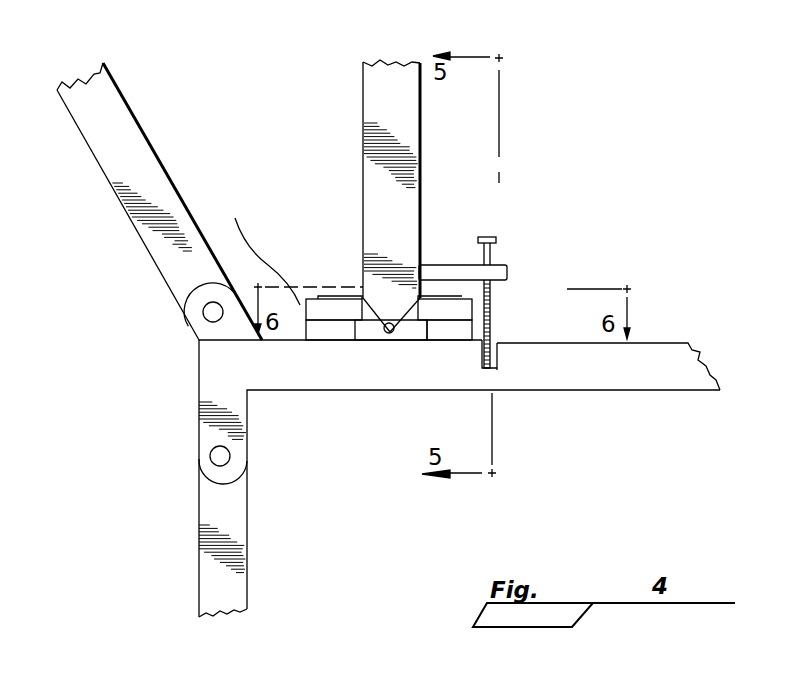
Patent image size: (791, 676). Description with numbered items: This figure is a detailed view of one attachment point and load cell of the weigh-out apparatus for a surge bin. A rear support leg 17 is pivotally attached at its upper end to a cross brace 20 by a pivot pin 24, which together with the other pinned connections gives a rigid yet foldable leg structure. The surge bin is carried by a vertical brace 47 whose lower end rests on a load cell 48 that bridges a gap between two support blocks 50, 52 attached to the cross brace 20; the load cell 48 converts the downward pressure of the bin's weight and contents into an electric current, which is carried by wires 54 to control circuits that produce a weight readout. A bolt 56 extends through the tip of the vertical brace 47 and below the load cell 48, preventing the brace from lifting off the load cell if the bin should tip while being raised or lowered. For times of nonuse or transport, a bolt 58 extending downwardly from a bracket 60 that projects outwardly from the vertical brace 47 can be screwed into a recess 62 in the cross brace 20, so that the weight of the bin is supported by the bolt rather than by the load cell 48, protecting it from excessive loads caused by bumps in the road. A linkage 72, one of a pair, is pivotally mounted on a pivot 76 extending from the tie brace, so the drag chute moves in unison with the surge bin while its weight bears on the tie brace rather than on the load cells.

The rear support leg 17 is at (210, 510).
The cross brace 20 is at (612, 377).
The pivot pin 24 is at (230, 456).
The vertical brace 47 is at (412, 113).
The load cell 48 is at (332, 308).
The support block 50 is at (325, 333).
The support block 52 is at (448, 335).
The wires 54 is at (252, 240).
The bolt 56 is at (392, 335).
The bolt 58 is at (490, 318).
The bracket 60 is at (465, 268).
The recess 62 is at (492, 370).
The linkage 72 is at (107, 156).
The pivot 76 is at (207, 312).